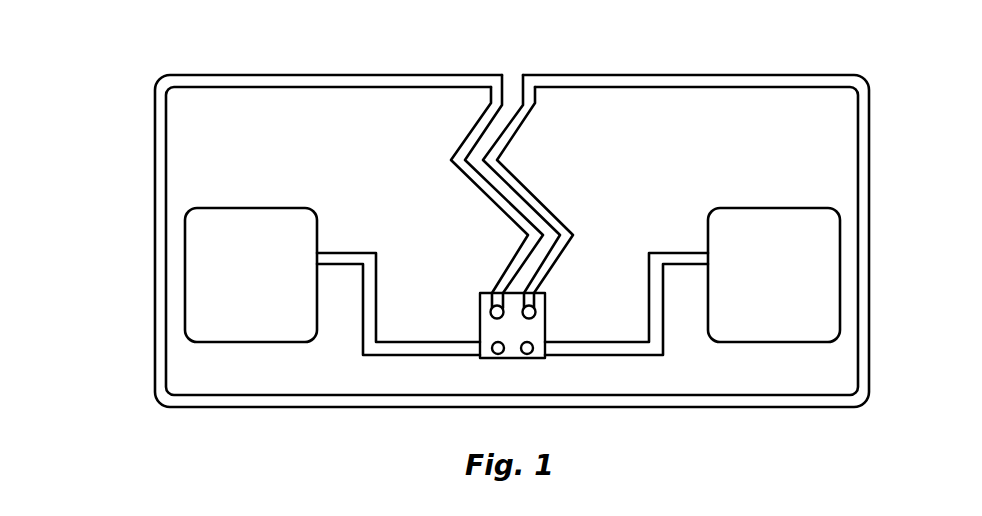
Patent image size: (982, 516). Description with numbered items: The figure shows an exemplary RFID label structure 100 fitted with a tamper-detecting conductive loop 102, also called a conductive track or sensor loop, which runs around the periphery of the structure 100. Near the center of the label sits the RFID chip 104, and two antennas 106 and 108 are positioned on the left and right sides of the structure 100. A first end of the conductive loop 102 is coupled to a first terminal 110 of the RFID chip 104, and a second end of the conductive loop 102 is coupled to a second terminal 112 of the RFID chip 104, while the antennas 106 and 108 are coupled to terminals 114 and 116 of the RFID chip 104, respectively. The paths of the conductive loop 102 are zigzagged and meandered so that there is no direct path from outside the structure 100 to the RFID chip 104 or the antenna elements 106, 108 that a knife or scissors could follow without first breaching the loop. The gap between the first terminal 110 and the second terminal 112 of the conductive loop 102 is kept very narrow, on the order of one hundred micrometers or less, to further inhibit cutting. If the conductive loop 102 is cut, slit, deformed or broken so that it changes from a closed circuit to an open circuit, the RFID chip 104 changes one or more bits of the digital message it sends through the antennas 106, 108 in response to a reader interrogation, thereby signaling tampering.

The structure 100 is at (126, 31).
The conductive loop 102 is at (573, 82).
The RFID chip 104 is at (490, 328).
The antenna 106 is at (268, 228).
The antenna 108 is at (740, 218).
The first terminal 110 is at (491, 308).
The second terminal 112 is at (536, 316).
The terminal 114 is at (497, 355).
The terminal 116 is at (525, 356).